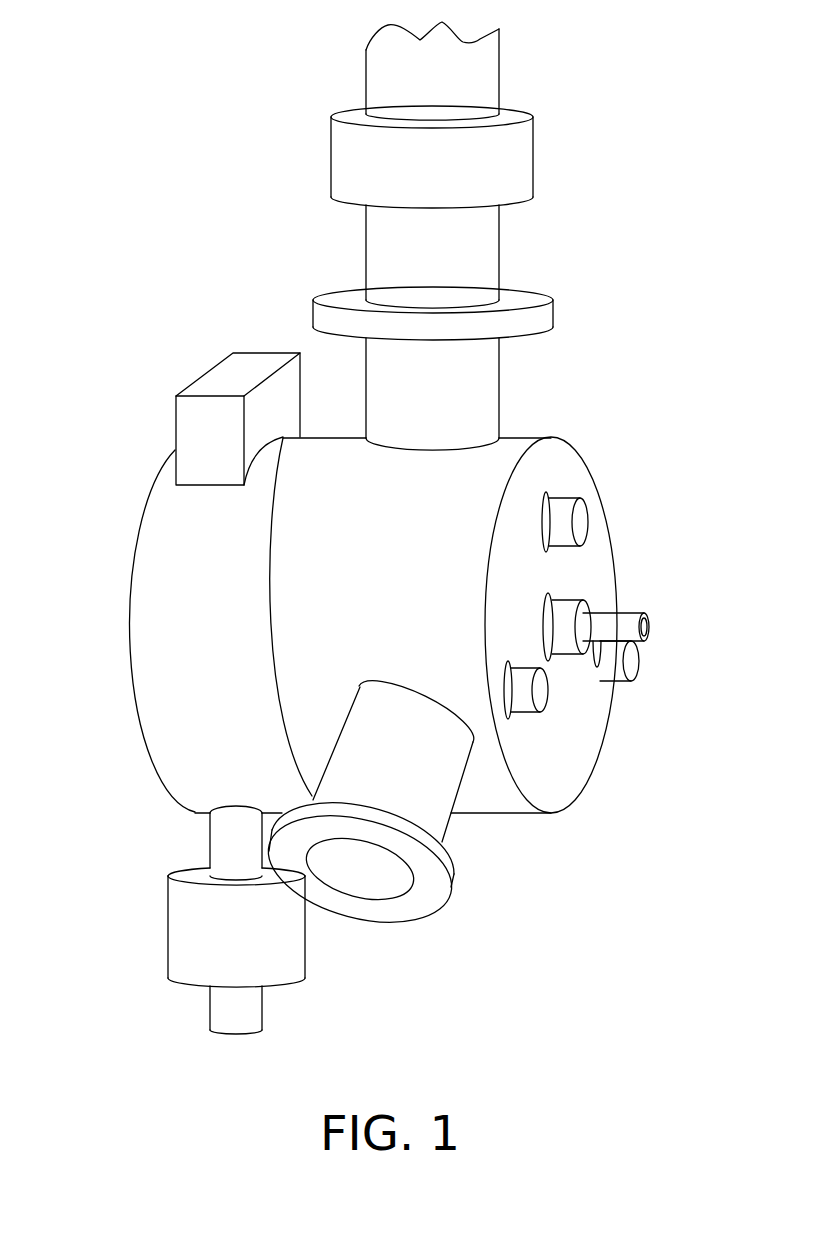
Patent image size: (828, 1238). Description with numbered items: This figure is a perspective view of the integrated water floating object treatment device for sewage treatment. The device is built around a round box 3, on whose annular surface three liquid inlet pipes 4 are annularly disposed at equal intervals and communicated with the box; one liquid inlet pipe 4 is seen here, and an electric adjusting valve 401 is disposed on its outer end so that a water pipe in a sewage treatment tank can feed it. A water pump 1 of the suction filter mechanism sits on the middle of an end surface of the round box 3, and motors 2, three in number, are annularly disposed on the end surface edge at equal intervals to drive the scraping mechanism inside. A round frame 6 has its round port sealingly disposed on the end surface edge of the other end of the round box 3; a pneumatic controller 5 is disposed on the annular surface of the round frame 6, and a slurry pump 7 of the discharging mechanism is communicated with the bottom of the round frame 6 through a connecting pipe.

The water pump 1 is at (556, 622).
The motors 2 is at (633, 647).
The round box 3 is at (565, 458).
The liquid inlet pipe 4 is at (518, 303).
The electric adjusting valve 401 is at (523, 142).
The pneumatic controller 5 is at (213, 381).
The round frame 6 is at (163, 665).
The slurry pump 7 is at (209, 932).